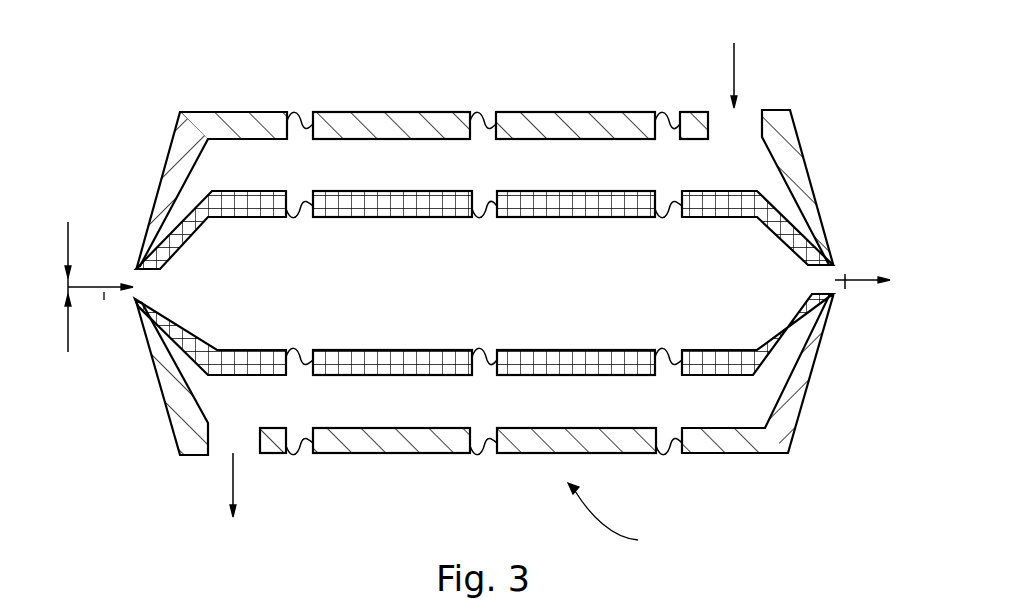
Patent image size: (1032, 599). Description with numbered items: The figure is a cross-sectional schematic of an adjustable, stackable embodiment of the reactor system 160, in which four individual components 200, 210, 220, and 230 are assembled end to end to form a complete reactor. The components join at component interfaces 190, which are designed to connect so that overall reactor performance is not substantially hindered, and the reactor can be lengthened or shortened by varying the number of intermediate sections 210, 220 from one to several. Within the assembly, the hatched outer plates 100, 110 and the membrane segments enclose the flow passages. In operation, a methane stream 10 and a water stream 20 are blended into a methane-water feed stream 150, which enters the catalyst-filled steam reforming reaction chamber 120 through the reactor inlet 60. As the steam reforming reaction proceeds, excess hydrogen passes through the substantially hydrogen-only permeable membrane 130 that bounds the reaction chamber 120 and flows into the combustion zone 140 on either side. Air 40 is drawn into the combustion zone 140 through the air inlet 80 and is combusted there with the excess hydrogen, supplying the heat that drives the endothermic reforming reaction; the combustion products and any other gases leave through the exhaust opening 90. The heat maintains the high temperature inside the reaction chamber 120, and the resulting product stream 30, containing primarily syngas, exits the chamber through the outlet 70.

The methane stream 10 is at (68, 249).
The water stream 20 is at (68, 323).
The product stream 30 is at (845, 284).
The air 40 is at (735, 58).
The reactor inlet 60 is at (132, 278).
The outlet 70 is at (836, 276).
The air inlet 80 is at (746, 118).
The exhaust opening 90 is at (666, 112).
The outer electrode plate 100 is at (357, 130).
The outer electrode segment 110 is at (347, 111).
The steam reforming reaction chamber 120 is at (570, 298).
The hydrogen permeable membrane 130 is at (340, 213).
The combustion zone 140 is at (600, 176).
The methane-water feed stream 150 is at (104, 292).
The reactor system 160 is at (627, 518).
The component interfaces 190 is at (298, 112).
The individual component 200 is at (193, 88).
The intermediate section 210 is at (357, 269).
The intermediate section 220 is at (506, 266).
The individual component 230 is at (654, 74).